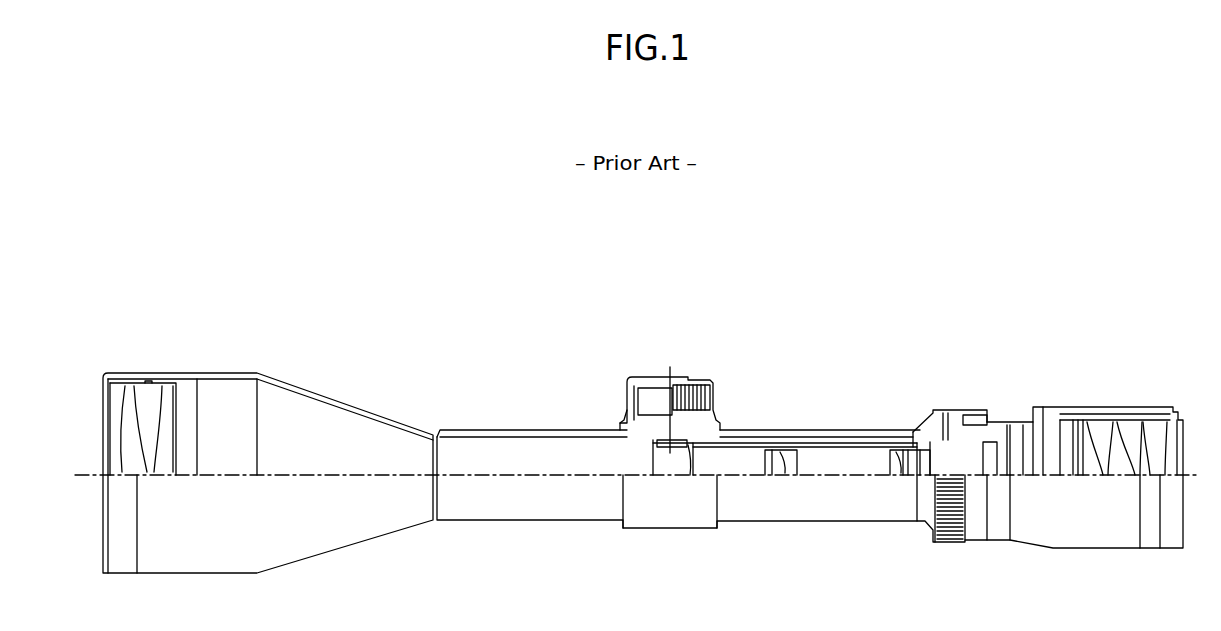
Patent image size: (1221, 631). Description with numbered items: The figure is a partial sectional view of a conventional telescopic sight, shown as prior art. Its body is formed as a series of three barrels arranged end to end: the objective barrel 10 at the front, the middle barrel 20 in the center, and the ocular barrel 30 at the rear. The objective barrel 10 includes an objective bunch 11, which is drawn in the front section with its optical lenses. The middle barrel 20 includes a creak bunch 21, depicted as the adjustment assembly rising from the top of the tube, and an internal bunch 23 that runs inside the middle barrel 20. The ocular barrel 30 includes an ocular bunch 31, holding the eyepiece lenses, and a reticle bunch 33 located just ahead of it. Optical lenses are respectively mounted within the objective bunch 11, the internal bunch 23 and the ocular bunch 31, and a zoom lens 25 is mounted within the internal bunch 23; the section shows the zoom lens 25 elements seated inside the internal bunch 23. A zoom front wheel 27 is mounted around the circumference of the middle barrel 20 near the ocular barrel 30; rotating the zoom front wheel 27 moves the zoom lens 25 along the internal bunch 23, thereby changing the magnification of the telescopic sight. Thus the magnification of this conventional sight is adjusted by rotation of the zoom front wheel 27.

The objective barrel 10 is at (230, 373).
The objective bunch 11 is at (152, 395).
The middle barrel 20 is at (577, 513).
The creak bunch 21 is at (632, 393).
The internal bunch 23 is at (842, 460).
The zoom lens 25 is at (784, 475).
The zoom front wheel 27 is at (952, 507).
The ocular barrel 30 is at (1072, 517).
The ocular bunch 31 is at (1143, 432).
The reticle bunch 33 is at (1012, 437).